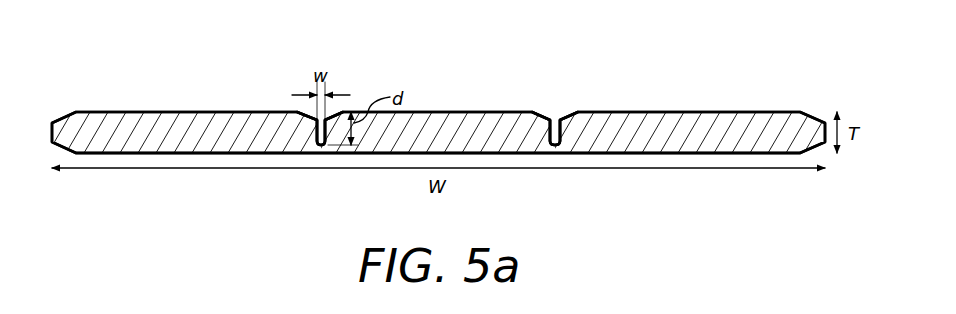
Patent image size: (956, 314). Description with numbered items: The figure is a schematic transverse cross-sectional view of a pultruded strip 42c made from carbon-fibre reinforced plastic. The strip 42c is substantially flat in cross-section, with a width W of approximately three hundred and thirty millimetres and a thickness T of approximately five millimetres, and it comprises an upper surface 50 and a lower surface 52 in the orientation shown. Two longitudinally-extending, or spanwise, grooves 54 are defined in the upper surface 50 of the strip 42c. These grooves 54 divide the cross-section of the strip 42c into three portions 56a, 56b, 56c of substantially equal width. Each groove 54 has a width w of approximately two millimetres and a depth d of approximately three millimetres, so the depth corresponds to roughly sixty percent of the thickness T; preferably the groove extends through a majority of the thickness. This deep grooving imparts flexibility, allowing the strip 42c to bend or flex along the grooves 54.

The pultruded strip 42c is at (592, 72).
The upper surface 50 is at (97, 108).
The lower surface 52 is at (99, 159).
The grooves 54 is at (317, 150).
The first portion 56a is at (183, 124).
The second portion 56b is at (471, 124).
The third portion 56c is at (689, 124).